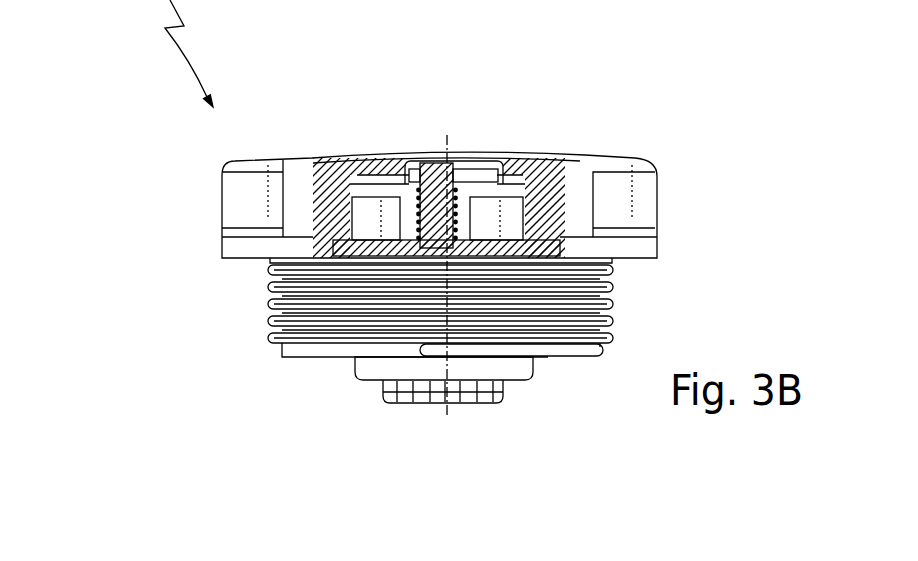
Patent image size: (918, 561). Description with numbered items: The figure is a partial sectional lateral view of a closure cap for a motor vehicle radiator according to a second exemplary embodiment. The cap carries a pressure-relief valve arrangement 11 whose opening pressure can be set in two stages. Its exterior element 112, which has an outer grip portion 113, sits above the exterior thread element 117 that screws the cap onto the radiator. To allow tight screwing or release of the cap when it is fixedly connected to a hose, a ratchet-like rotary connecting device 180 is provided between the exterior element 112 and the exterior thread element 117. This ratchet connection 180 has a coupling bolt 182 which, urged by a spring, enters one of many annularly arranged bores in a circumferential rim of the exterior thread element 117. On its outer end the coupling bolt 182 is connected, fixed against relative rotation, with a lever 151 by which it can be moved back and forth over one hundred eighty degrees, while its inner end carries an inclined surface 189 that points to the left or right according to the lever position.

The pressure-relief valve arrangement 11 is at (379, 418).
The exterior element 112 is at (546, 185).
The grip portion 113 is at (233, 193).
The exterior thread element 117 is at (268, 302).
The lever 151 is at (480, 152).
The ratchet-like rotary connecting device 180 is at (463, 146).
The coupling bolt 182 is at (463, 250).
The inclined surface 189 is at (413, 250).